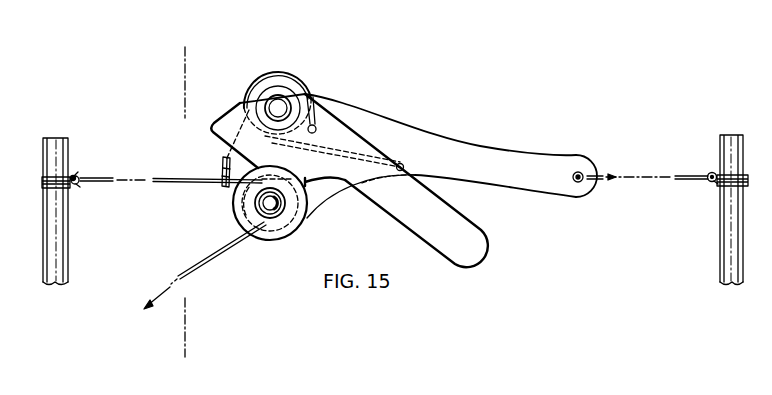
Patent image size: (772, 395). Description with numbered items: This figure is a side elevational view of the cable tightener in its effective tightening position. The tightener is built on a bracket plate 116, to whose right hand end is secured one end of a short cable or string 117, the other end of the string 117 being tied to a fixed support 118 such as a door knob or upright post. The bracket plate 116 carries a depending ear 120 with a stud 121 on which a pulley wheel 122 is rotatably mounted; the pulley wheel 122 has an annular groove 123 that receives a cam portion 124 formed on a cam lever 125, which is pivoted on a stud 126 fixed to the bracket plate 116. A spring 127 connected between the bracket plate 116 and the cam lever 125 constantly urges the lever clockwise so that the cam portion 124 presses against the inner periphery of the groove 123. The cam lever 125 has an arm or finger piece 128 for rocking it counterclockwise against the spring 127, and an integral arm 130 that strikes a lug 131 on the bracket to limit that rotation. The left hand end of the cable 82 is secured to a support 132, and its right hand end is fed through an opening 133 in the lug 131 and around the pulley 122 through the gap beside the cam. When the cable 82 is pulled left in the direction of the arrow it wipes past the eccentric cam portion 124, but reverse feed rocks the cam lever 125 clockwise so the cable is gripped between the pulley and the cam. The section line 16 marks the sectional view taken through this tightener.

The section line 16- 16 is at (180, 334).
The cable 82 is at (173, 178).
The bracket plate 116 is at (537, 150).
The short cable or string 117 is at (686, 175).
The fixed support 118 is at (729, 144).
The depending ear 120 is at (238, 220).
The stud 121 is at (281, 207).
The pulley wheel 122 is at (295, 228).
The annular groove 123 is at (230, 200).
The cam portion 124 is at (317, 200).
The cam lever 125 is at (362, 139).
The stud 126 is at (283, 107).
The spring 127 is at (276, 70).
The arm or finger piece 128 is at (463, 217).
The arm 130 is at (232, 130).
The lug 131 is at (223, 157).
The support 132 is at (66, 147).
The opening 133 is at (222, 173).